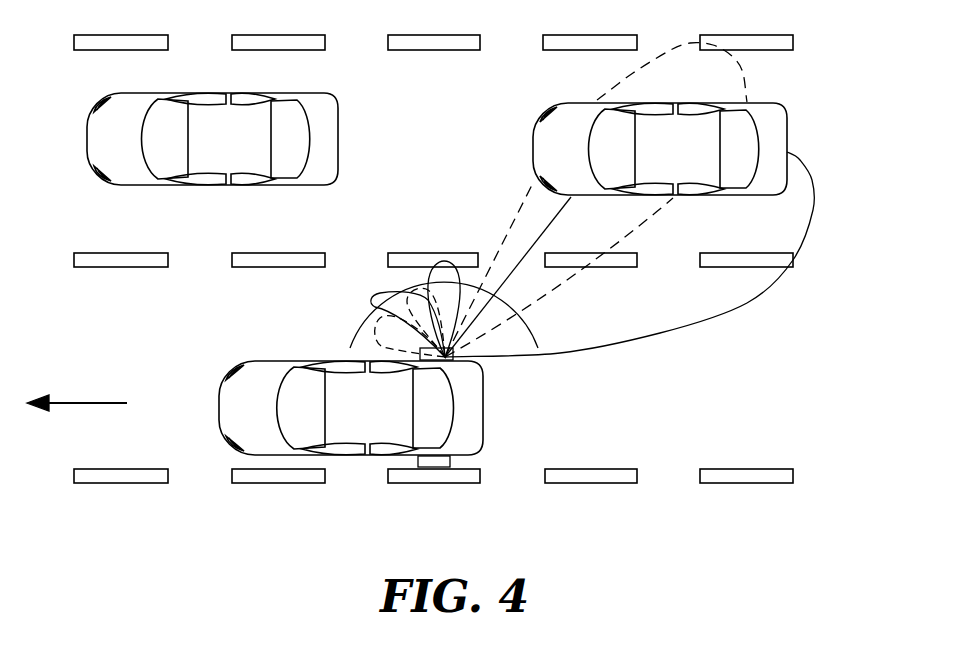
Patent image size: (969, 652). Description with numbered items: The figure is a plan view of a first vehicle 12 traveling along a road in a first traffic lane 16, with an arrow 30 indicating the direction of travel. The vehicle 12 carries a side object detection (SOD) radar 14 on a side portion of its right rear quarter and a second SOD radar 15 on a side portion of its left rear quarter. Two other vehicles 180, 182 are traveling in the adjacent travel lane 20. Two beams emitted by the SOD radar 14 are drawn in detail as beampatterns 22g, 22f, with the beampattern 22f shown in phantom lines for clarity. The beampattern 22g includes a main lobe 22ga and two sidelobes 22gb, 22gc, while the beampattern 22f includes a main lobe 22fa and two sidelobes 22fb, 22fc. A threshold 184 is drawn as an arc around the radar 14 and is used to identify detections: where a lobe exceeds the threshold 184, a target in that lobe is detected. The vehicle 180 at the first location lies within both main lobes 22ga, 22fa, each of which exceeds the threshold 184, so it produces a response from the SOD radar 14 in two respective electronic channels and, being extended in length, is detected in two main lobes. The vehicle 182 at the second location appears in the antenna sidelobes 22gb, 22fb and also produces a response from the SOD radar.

The first vehicle 12 is at (483, 413).
The side object detection (SOD) radar 14 is at (453, 360).
The second SOD radar 15 is at (418, 462).
The first traffic lane 16 is at (680, 426).
The second traffic lane 20 is at (108, 231).
The arrow 30 is at (53, 403).
The vehicle 180 is at (787, 152).
The vehicle 182 is at (338, 140).
The threshold 184 is at (529, 330).
The beampattern 22f is at (585, 277).
The main lobe 22fa is at (663, 212).
The sidelobe 22fb is at (412, 293).
The sidelobe 22fc is at (365, 338).
The beampattern 22g is at (747, 303).
The main lobe 22ga is at (800, 237).
The sidelobe 22gb is at (440, 262).
The sidelobe 22gc is at (381, 297).